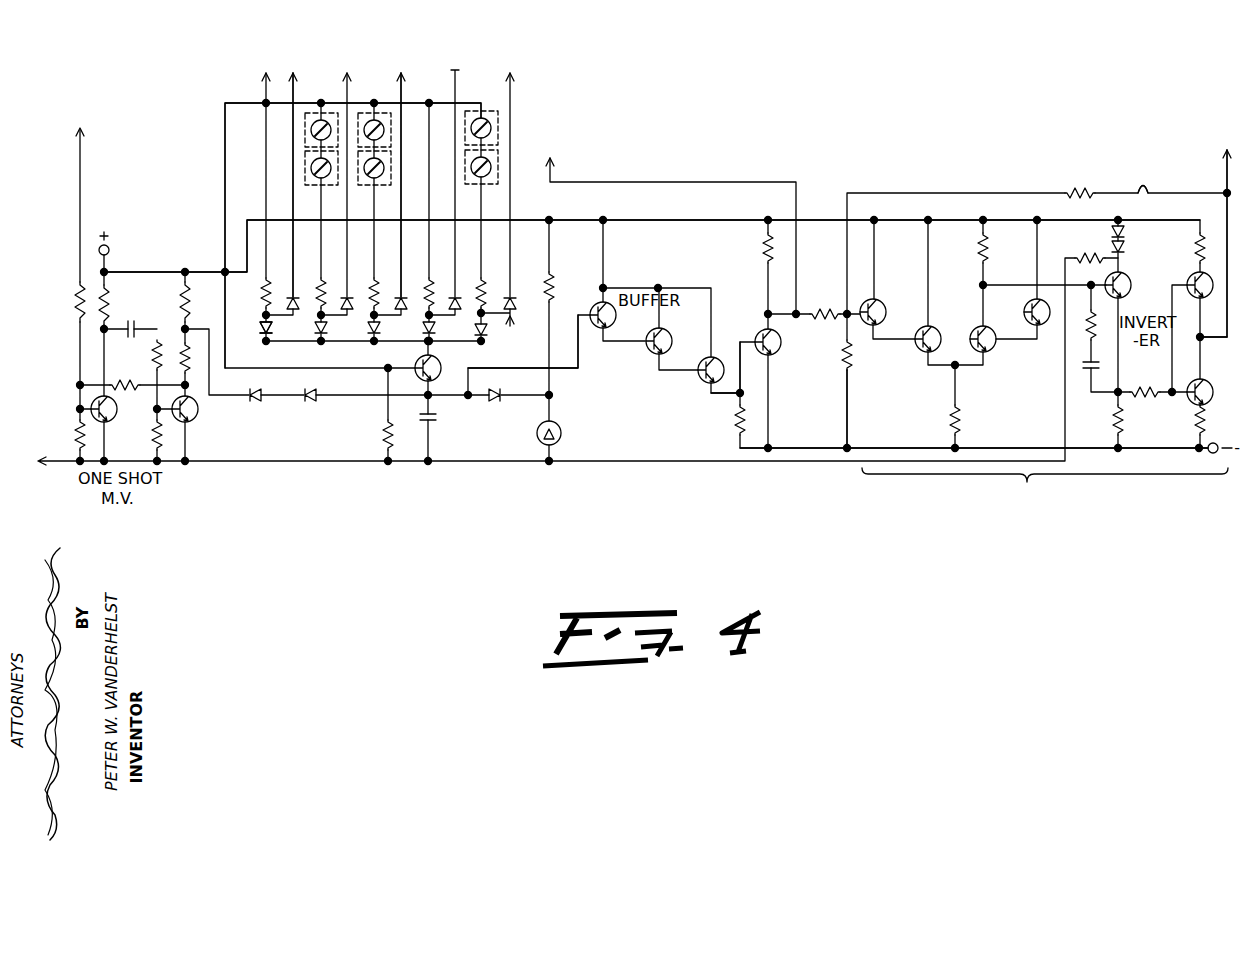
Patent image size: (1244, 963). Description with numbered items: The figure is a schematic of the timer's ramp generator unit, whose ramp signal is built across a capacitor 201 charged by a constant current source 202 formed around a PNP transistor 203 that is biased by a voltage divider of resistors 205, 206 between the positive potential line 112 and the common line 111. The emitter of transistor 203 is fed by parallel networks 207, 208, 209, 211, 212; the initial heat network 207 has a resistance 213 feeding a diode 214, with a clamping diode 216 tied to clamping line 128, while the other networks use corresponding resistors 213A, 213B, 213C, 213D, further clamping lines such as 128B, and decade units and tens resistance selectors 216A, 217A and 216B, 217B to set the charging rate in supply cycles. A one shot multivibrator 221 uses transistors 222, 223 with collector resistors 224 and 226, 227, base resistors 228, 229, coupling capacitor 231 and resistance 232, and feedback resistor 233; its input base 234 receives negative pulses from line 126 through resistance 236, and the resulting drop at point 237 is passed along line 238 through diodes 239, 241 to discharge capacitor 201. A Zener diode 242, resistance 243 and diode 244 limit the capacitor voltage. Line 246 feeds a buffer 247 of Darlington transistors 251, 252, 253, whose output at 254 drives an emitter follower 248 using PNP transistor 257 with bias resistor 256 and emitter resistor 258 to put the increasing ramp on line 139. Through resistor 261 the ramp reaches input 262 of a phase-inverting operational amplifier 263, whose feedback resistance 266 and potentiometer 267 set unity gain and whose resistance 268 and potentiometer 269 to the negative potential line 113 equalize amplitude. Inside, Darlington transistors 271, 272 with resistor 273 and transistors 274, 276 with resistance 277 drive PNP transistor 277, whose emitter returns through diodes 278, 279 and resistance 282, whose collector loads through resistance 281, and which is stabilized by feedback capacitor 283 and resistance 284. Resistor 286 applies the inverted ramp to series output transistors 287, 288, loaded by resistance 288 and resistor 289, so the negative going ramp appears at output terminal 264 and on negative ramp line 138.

The common line 111 is at (276, 460).
The positive potential line 112 is at (223, 103).
The negative potential line 113 is at (816, 447).
The negative trigger pulse line 126 is at (82, 164).
The clamping line 128 is at (291, 147).
The clamping line 128B is at (402, 92).
The negative ramp line 138 is at (1225, 168).
The increasing ramp line 139 is at (797, 280).
The capacitor 201 is at (436, 421).
The constant current source 202 is at (461, 401).
The PNP transistor 203 is at (443, 370).
The resistor 205 is at (387, 436).
The resistor 206 is at (265, 326).
The initial heat network 207 is at (270, 345).
The network 208 is at (360, 350).
The network 209 is at (406, 350).
The additional network 211 is at (435, 343).
The additional network 212 is at (513, 208).
The resistance 213 is at (264, 293).
The resistor 213A is at (287, 327).
The resistor 213B is at (342, 327).
The resistor 213C is at (396, 327).
The resistor 213D is at (380, 204).
The diode 214 is at (262, 334).
The clamping diode 216 is at (288, 283).
The units resistance selector 216A is at (310, 168).
The units resistance selector 216B is at (384, 170).
The tens resistance selector 217A is at (310, 130).
The tens resistance selector 217B is at (376, 118).
The one shot multivibrator circuit 221 is at (201, 477).
The transistor 222 is at (112, 414).
The transistor 223 is at (198, 419).
The resistor 224 is at (106, 302).
The resistor 226 is at (188, 363).
The resistor 227 is at (187, 301).
The resistor 228 is at (77, 448).
The resistor 229 is at (156, 435).
The capacitor 231 is at (132, 320).
The resistance 232 is at (156, 356).
The resistor 233 is at (121, 388).
The base 234 is at (79, 406).
The resistance 236 is at (78, 296).
The point 237 is at (187, 328).
The line 238 is at (250, 398).
The diode 239 is at (258, 390).
The diode 241 is at (310, 390).
The Zener diode 242 is at (561, 436).
The resistance 243 is at (553, 272).
The diode 244 is at (496, 390).
The line 246 is at (580, 358).
The buffer circuit 247 is at (647, 365).
The emitter follower output stage 248 is at (779, 346).
The transistor 251 is at (612, 322).
The transistor 252 is at (671, 345).
The transistor 253 is at (699, 378).
The base 254 is at (722, 406).
The resistor 256 is at (738, 420).
The PNP transistor 257 is at (781, 335).
The resistor 258 is at (766, 252).
The resistor 261 is at (834, 312).
The input 262 is at (846, 300).
The operational amplifier 263 is at (1112, 480).
The output terminal 264 is at (1203, 340).
The resistance 266 is at (1080, 198).
The feedback potentiometer 267 is at (1147, 198).
The resistance 268 is at (850, 360).
The potentiometer 269 is at (840, 418).
The transistor 271 is at (883, 302).
The transistor 272 is at (942, 339).
The resistor 273 is at (958, 418).
The transistor 274 is at (977, 327).
The transistor 276 is at (1027, 308).
The PNP transistor 277 is at (986, 248).
The diode 278 is at (1112, 236).
The diode 279 is at (1112, 249).
The resistance 281 is at (1122, 418).
The resistance 282 is at (1105, 262).
The capacitor 283 is at (1088, 372).
The resistance 284 is at (1105, 333).
The resistor 286 is at (1165, 388).
The NPN transistor 287 is at (1192, 278).
The PNP transistor 288 is at (1198, 245).
The resistor 289 is at (1204, 418).